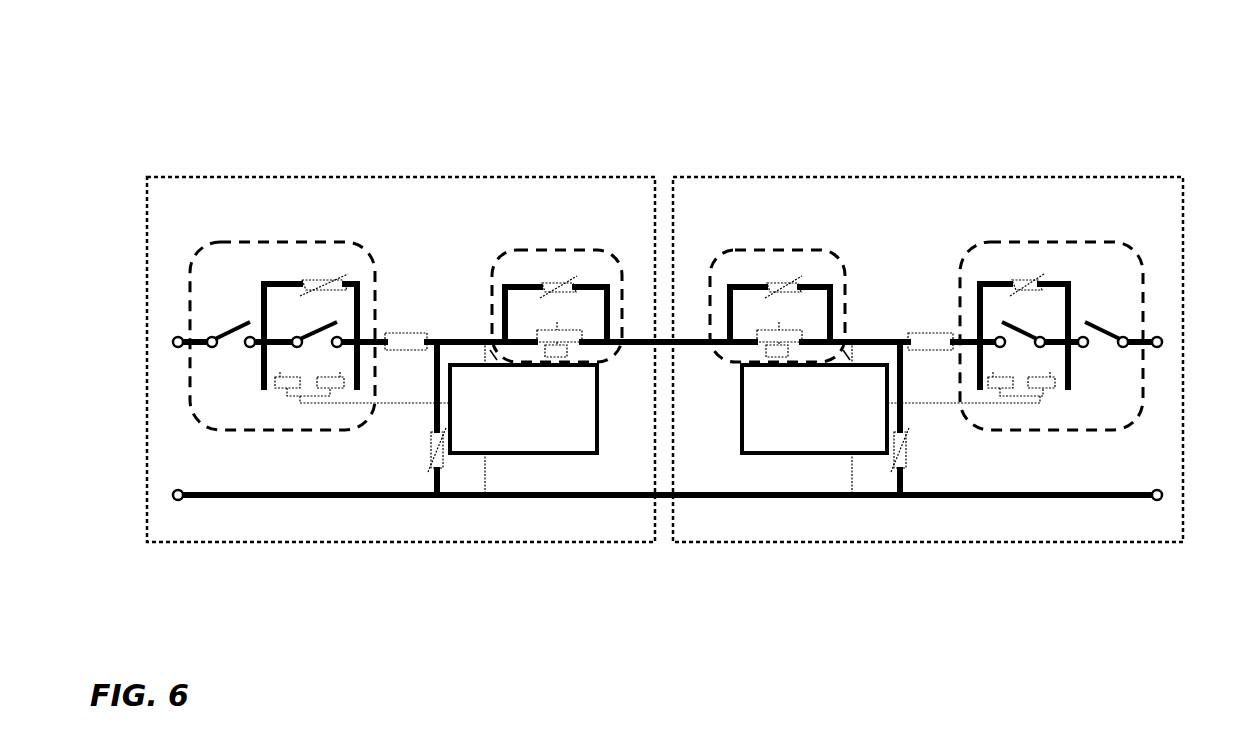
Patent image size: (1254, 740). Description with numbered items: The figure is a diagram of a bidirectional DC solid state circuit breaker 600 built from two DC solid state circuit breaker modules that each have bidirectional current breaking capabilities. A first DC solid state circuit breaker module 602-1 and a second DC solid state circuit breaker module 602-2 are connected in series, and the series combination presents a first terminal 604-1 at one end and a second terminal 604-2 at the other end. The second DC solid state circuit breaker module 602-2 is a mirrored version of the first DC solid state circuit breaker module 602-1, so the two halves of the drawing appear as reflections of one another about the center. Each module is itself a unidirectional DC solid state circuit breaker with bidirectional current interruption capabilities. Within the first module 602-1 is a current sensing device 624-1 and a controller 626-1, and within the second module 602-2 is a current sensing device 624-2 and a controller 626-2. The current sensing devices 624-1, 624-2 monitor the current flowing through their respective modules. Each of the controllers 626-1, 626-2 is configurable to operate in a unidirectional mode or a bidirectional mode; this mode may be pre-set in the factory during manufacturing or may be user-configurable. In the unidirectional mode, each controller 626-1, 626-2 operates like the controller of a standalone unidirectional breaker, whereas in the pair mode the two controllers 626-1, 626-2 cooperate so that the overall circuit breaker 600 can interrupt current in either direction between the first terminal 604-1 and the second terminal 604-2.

The DC solid state circuit breaker 600 is at (757, 56).
The first DC solid state circuit breaker module 602-1 is at (225, 178).
The second DC solid state circuit breaker module 602-2 is at (873, 178).
The first terminal 604-1 is at (178, 337).
The second terminal 604-2 is at (1160, 337).
The current sensing device 624-1 is at (412, 352).
The current sensing device 624-2 is at (925, 352).
The controller 626-1 is at (523, 409).
The controller 626-2 is at (814, 409).